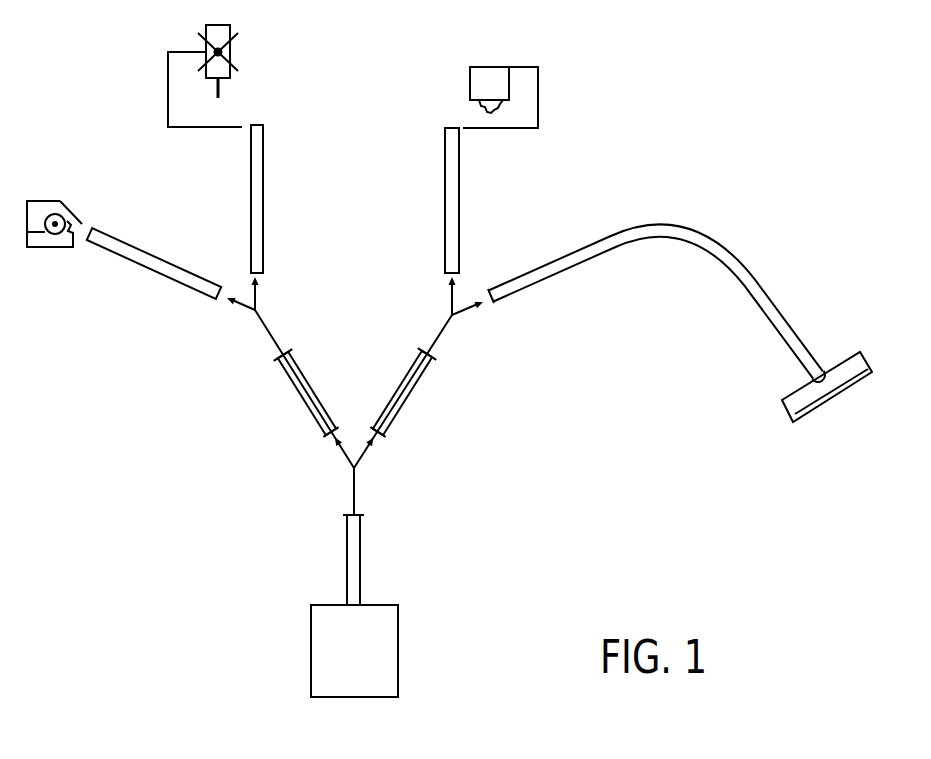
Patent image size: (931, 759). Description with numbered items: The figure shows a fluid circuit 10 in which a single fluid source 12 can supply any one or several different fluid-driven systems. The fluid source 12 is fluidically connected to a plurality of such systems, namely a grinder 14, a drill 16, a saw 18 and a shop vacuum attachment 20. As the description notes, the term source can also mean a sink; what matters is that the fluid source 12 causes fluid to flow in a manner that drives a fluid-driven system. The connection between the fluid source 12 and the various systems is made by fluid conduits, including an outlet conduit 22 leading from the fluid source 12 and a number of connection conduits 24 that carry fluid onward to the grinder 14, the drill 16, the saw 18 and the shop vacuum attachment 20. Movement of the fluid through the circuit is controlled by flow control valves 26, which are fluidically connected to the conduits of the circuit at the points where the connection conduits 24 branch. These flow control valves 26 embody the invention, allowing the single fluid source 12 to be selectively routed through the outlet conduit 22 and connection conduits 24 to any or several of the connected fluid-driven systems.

The fluid circuit 10 is at (233, 501).
The fluid source 12 is at (388, 663).
The grinder 14 is at (40, 247).
The drill 16 is at (230, 51).
The saw 18 is at (518, 90).
The shop vacuum attachment 20 is at (847, 365).
The outlet conduit 22 is at (353, 555).
The connection conduits 24 is at (128, 250).
The flow control valves 26 is at (266, 302).